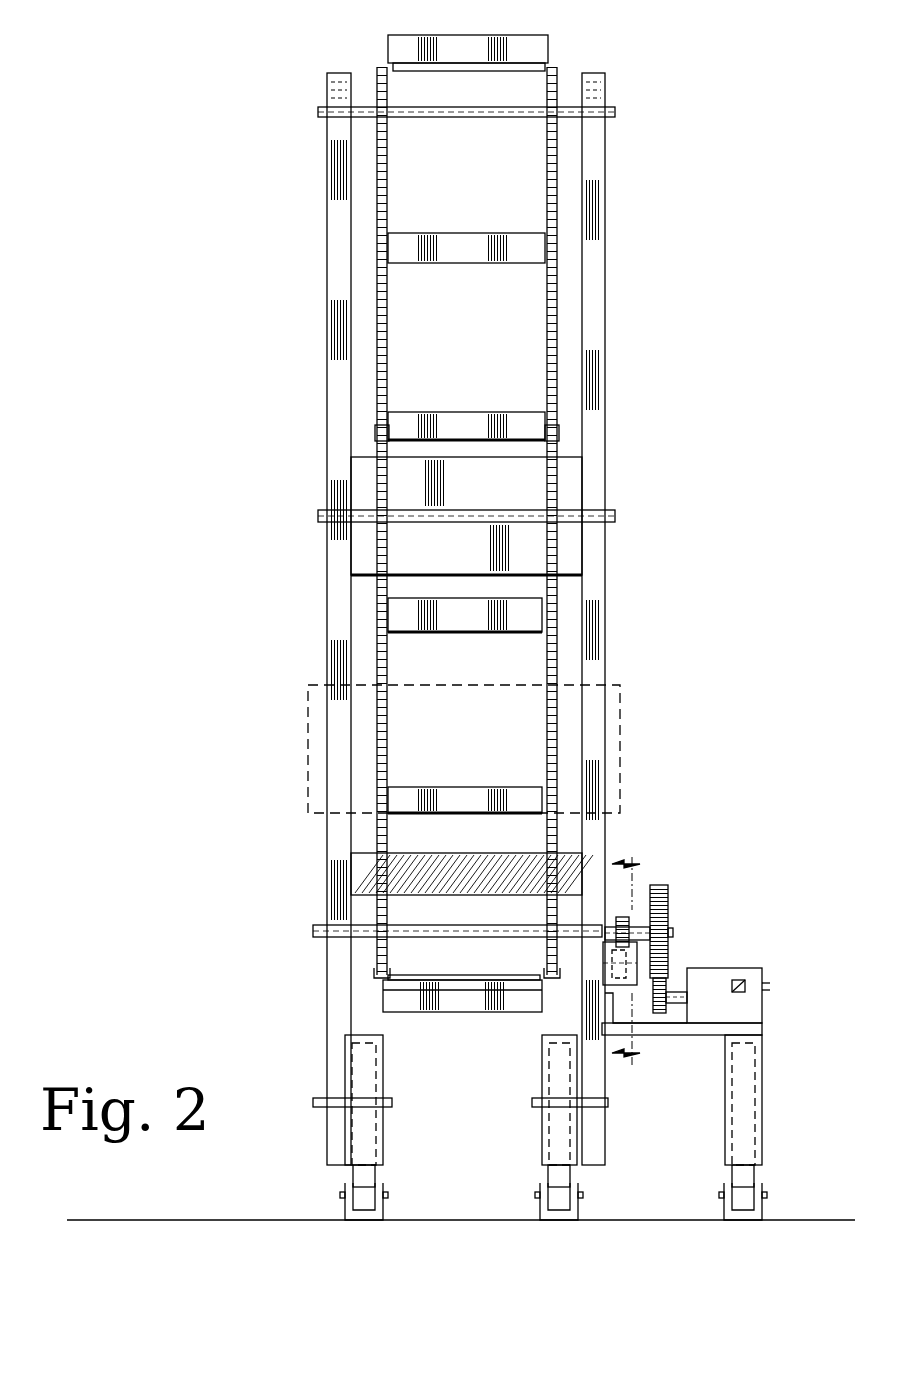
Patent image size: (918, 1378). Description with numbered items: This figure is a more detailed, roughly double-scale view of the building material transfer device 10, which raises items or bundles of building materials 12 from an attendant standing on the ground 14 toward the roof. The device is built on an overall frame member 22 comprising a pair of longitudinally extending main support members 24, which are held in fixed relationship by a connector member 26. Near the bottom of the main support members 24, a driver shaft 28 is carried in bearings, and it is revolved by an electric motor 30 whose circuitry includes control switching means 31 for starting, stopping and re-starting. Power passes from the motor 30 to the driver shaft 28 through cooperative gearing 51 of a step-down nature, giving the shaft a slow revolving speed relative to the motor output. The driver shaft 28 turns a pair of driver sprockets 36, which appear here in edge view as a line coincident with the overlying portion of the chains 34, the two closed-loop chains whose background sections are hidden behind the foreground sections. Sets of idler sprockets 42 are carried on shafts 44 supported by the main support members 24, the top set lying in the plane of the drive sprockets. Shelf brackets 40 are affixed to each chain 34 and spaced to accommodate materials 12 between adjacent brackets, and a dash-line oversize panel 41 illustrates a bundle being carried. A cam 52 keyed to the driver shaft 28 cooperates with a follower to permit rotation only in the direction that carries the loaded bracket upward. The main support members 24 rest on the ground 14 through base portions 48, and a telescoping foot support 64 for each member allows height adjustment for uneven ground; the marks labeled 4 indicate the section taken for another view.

The building material transfer device 10 is at (660, 326).
The building materials 12 is at (480, 412).
The ground 14 is at (155, 1220).
The frame member 22 is at (333, 738).
The main support members 24 is at (600, 727).
The connector member 26 is at (357, 657).
The driver shaft 28 is at (452, 938).
The electric motor 30 is at (717, 968).
The control switching means 31 is at (742, 995).
The chains 34 is at (373, 428).
The driver sprockets 36 is at (385, 917).
The shelf brackets 40 is at (428, 35).
The oversize panel 41 is at (620, 755).
The idler sprockets 42 is at (378, 72).
The shafts 44 is at (442, 118).
The base portions 48 is at (516, 1089).
The cooperative gearing 51 is at (677, 896).
The cam 52 is at (630, 925).
The telescoping foot support 64 is at (542, 1134).
The section line 4 is at (635, 961).